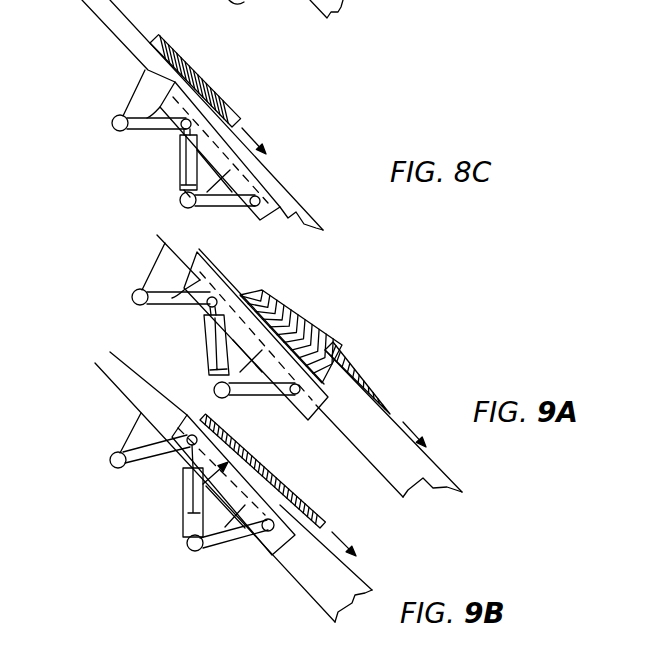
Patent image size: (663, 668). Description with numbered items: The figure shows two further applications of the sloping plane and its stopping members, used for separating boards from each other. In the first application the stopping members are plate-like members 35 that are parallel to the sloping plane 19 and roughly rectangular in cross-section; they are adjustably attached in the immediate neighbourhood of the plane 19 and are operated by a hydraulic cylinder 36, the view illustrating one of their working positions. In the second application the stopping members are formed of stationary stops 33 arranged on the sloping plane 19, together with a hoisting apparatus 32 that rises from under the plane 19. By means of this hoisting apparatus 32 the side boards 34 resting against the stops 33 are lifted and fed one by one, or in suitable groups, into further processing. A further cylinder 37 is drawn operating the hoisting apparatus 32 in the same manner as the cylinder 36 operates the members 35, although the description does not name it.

In FIG. 8C, the sloping plane 19 is at (114, 29).
In FIG. 9A, the sloping plane 19 is at (371, 416).
In FIG. 9B, the sloping plane 19 is at (328, 562).
In FIG. 9A, the hoisting apparatus 32 is at (240, 325).
In FIG. 9B, the hoisting apparatus 32 is at (272, 536).
In FIG. 9A, the stationary stops 33 is at (337, 380).
In FIG. 9B, the stationary stops 33 is at (288, 511).
In FIG. 9A, the side boards 34 is at (324, 316).
In FIG. 8C, the plate-like members 35 is at (262, 182).
In FIG. 8C, the hydraulic cylinder 36 is at (180, 168).
In FIG. 9A, the actuating cylinder 37 is at (203, 347).
In FIG. 9B, the actuating cylinder 37 is at (183, 507).